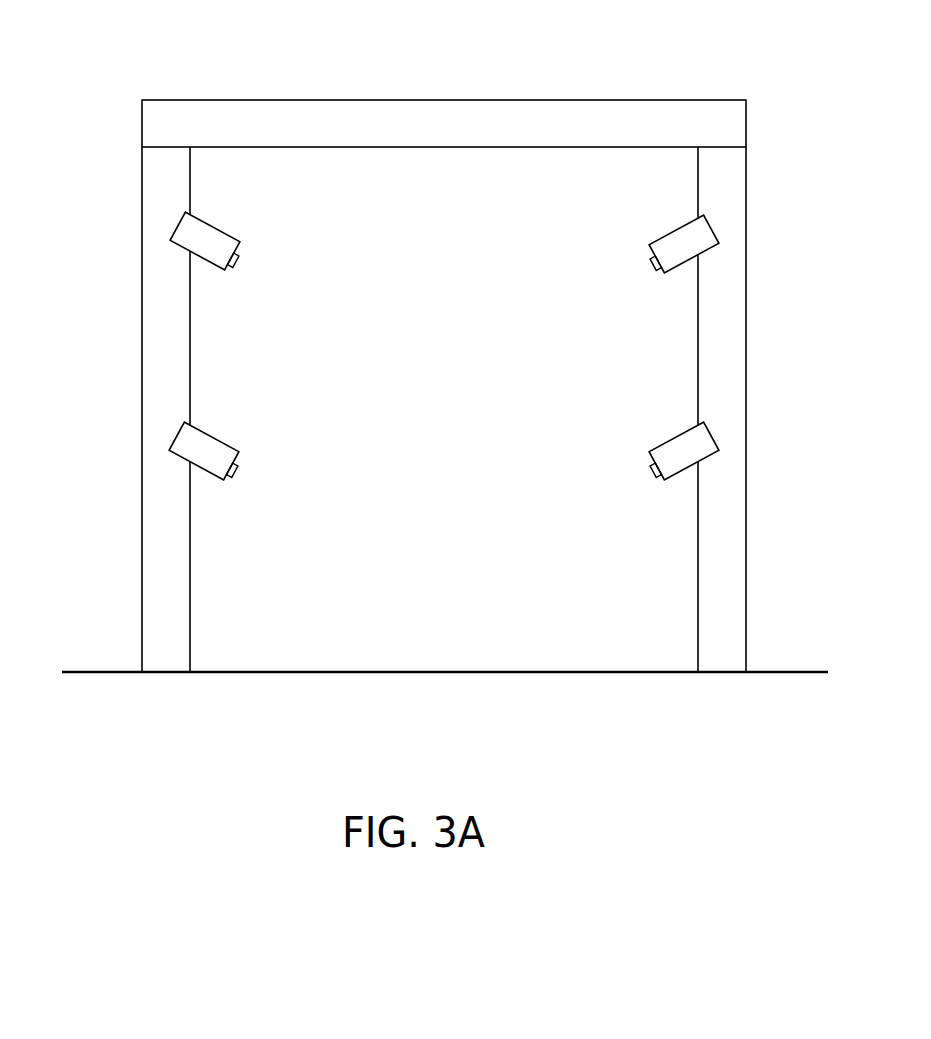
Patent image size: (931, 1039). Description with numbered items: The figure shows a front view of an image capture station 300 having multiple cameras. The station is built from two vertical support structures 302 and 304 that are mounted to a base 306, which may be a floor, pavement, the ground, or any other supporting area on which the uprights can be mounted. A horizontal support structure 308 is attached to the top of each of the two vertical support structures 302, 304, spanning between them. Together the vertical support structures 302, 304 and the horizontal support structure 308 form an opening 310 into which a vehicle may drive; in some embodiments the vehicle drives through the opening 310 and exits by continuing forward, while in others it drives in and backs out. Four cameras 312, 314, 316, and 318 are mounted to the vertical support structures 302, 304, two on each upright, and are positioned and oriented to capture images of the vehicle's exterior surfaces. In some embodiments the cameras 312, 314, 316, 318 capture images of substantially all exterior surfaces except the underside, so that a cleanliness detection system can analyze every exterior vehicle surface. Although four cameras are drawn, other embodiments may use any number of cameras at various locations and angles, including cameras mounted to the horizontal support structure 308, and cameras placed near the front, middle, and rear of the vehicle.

The image capture station 300 is at (477, 69).
The vertical support structure 302 is at (142, 193).
The vertical support structure 304 is at (746, 193).
The base 306 is at (427, 672).
The horizontal support structure 308 is at (237, 100).
The opening 310 is at (463, 411).
The camera 312 is at (207, 242).
The camera 314 is at (206, 452).
The camera 316 is at (681, 245).
The camera 318 is at (681, 452).